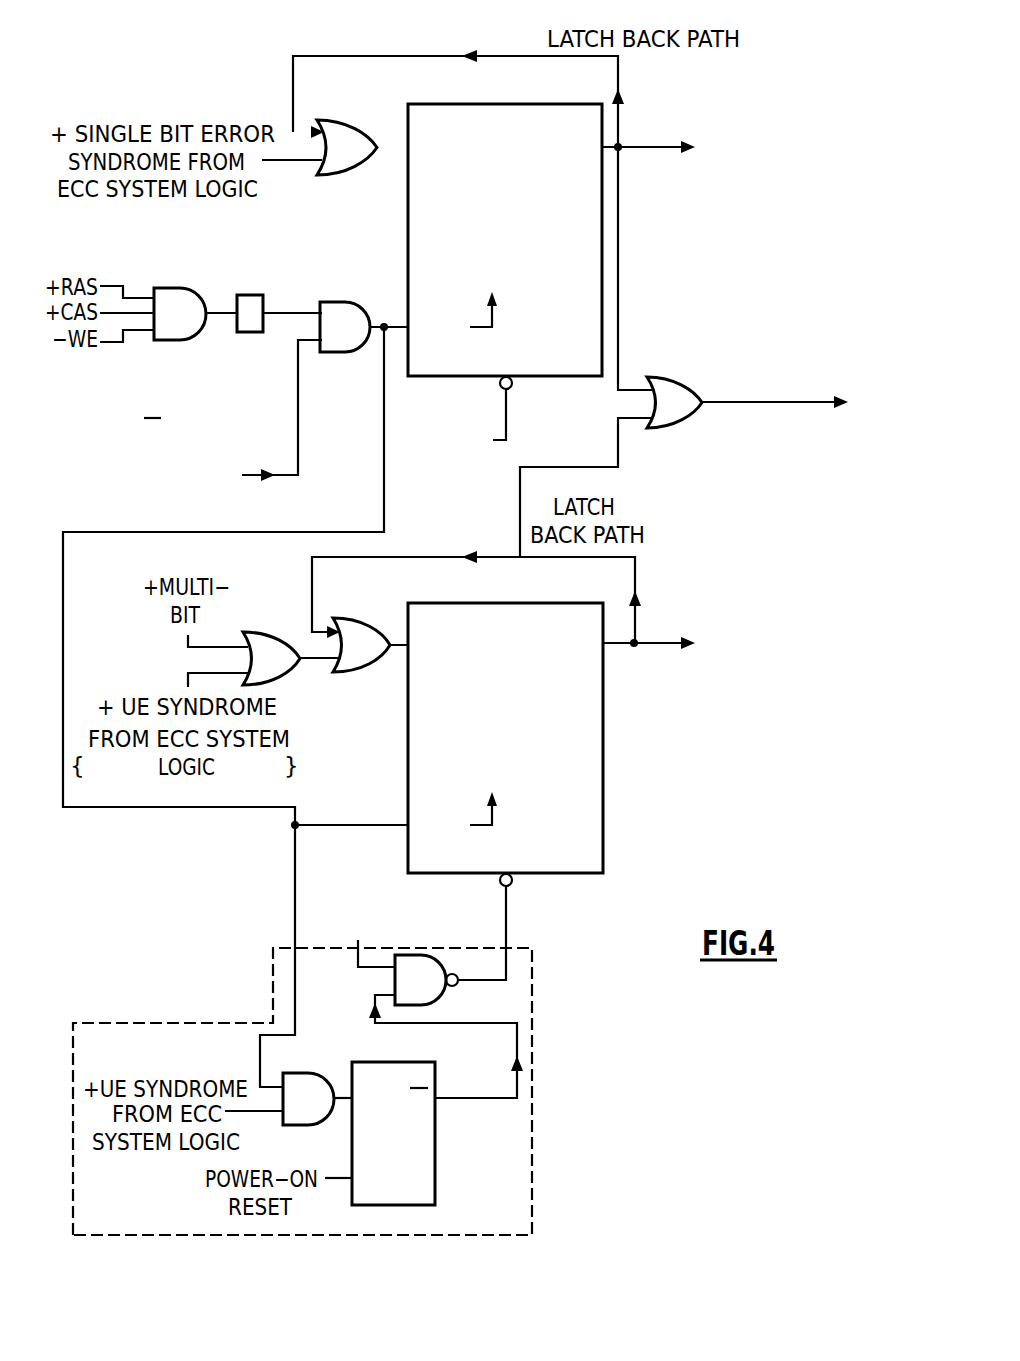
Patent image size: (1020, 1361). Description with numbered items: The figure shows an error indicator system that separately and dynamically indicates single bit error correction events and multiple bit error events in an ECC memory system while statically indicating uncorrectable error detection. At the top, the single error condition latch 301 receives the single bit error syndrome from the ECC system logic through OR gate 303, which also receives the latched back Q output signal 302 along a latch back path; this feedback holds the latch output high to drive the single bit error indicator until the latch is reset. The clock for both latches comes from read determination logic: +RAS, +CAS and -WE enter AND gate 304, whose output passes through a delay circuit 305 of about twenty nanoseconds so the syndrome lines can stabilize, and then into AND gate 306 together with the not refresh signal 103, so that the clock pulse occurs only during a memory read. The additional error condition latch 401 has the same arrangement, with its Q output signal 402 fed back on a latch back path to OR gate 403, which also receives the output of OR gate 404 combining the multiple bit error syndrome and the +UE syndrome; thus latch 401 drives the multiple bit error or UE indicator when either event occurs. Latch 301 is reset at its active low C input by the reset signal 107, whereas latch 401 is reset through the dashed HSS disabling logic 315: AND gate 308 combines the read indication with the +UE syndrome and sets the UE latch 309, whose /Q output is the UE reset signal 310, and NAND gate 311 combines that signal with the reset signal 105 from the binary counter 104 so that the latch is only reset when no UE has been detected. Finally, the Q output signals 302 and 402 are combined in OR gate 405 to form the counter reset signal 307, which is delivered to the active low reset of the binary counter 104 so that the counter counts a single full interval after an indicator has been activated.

The error condition latch 301 is at (527, 104).
The latch output signal Q 302 is at (630, 148).
The OR gate 303 is at (330, 120).
The AND gate 304 is at (176, 342).
The delay circuit 305 is at (245, 357).
The AND gate 306 is at (343, 302).
The counter reset signal 307 is at (725, 404).
The AND gate 308 is at (290, 1074).
The UE latch 309 is at (385, 1062).
The UE reset signal 310 is at (517, 1042).
The NAND gate 311 is at (438, 1000).
The HSS disabling logic 315 is at (220, 1022).
The additional error condition latch 401 is at (537, 603).
The latch output signal 402 is at (648, 650).
The OR gate 403 is at (345, 620).
The OR gate 404 is at (282, 684).
The OR gate 405 is at (660, 377).
The not refresh signal 103 is at (194, 422).
The binary counter 104 is at (776, 537).
The reset signal 105 is at (372, 968).
The reset signal 107 is at (461, 428).